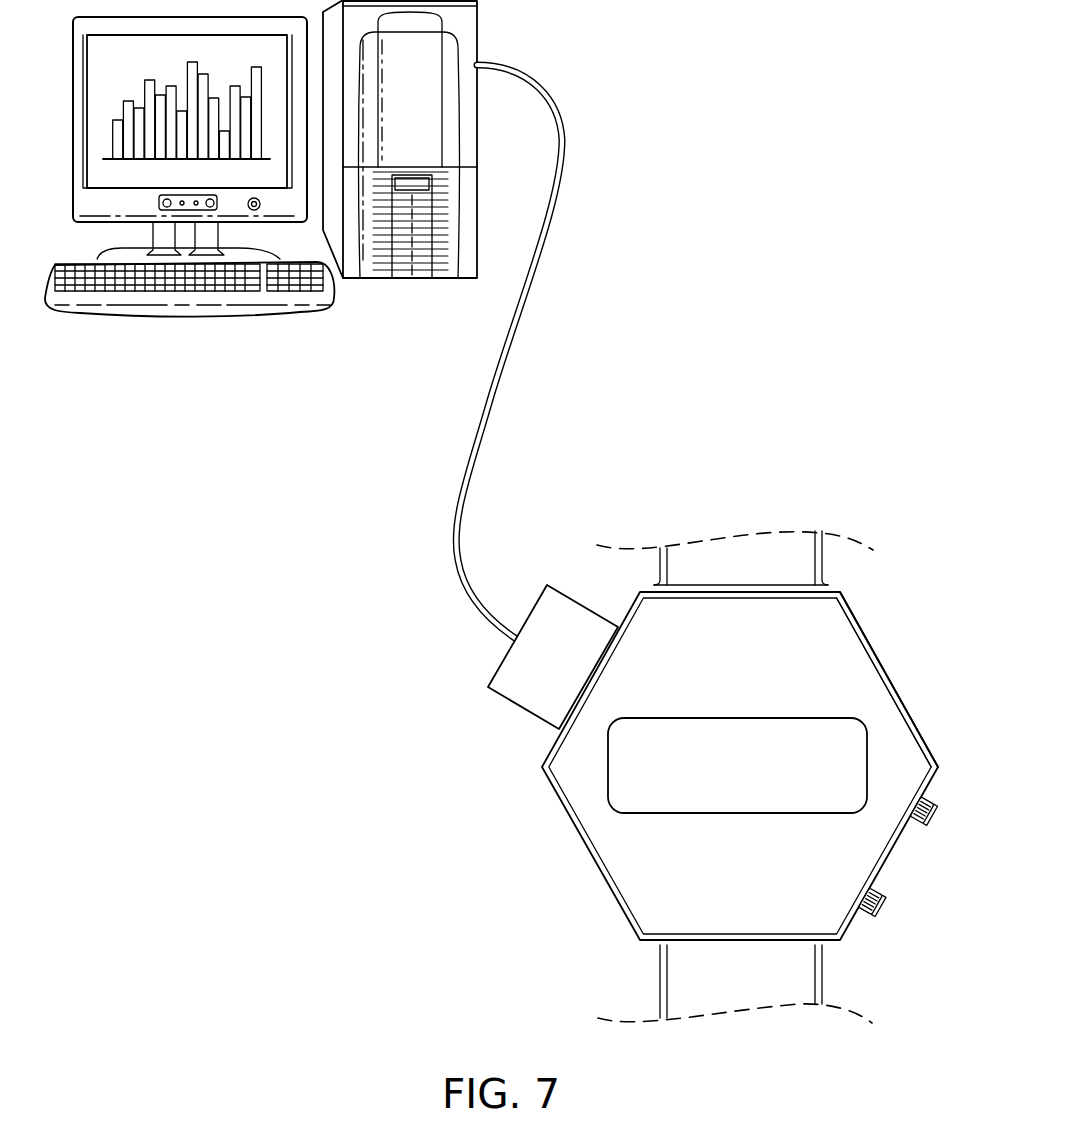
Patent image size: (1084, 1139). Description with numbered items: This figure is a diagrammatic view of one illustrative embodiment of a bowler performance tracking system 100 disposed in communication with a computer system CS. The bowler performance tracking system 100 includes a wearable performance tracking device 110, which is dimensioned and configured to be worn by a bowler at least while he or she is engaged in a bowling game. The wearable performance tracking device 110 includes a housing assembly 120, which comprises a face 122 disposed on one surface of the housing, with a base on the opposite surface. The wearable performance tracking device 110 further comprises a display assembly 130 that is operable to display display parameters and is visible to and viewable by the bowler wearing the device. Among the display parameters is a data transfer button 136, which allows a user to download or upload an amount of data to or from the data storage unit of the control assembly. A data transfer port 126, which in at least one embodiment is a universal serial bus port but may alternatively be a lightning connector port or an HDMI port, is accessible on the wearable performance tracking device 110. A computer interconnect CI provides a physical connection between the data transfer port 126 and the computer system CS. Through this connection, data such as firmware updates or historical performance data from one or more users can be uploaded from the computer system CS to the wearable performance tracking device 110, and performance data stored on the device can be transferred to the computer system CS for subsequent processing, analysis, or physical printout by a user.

The bowler performance tracking system 100 is at (706, 338).
The wearable performance tracking device 110 is at (898, 914).
The housing assembly 120 is at (574, 875).
The face 122 is at (845, 632).
The data transfer port 126 is at (545, 733).
The display assembly 130 is at (899, 682).
The data transfer button 136 is at (683, 726).
The computer system CS is at (180, 357).
The computer interconnect CI is at (518, 312).